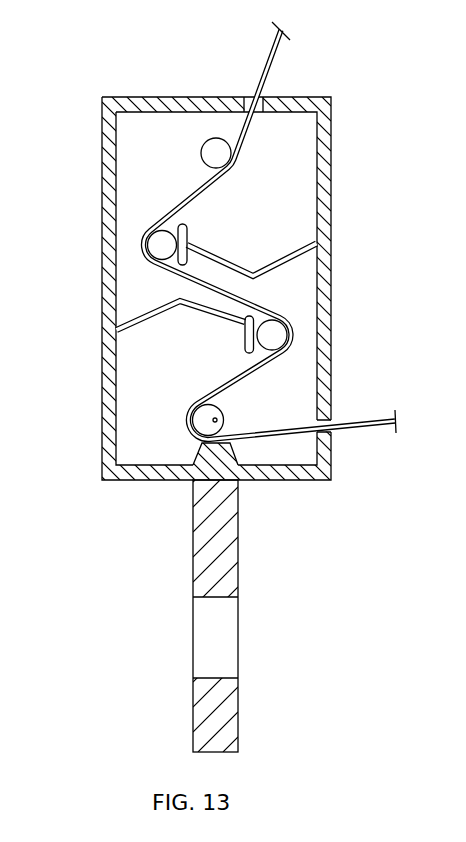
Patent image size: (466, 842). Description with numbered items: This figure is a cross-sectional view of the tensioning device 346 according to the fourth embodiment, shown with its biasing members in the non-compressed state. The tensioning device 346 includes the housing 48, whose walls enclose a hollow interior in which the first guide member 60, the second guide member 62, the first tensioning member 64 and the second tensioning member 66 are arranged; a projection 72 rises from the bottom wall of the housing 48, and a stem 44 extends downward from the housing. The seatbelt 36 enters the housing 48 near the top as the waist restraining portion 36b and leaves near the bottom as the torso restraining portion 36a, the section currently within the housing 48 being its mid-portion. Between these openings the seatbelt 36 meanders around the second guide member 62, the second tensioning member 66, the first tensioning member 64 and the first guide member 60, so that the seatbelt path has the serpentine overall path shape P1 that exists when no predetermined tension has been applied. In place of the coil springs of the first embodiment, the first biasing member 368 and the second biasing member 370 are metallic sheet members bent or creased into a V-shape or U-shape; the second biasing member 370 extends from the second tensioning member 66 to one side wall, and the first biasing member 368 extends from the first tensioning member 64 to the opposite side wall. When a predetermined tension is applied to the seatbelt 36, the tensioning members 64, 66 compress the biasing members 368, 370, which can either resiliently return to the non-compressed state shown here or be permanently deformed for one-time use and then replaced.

The tensioning device 346 is at (70, 115).
The housing 48 is at (324, 128).
The projection 72 is at (236, 458).
The stem 44 is at (216, 539).
The seatbelt 36 is at (286, 70).
The torso restraining portion 36a is at (367, 421).
The waist restraining portion 36b is at (276, 43).
The overall path shape P1 is at (246, 135).
The second biasing member 370 is at (226, 258).
The first biasing member 368 is at (155, 318).
The second guide member 62 is at (213, 153).
The second tensioning member 66 is at (162, 245).
The first tensioning member 64 is at (271, 338).
The first guide member 60 is at (207, 422).